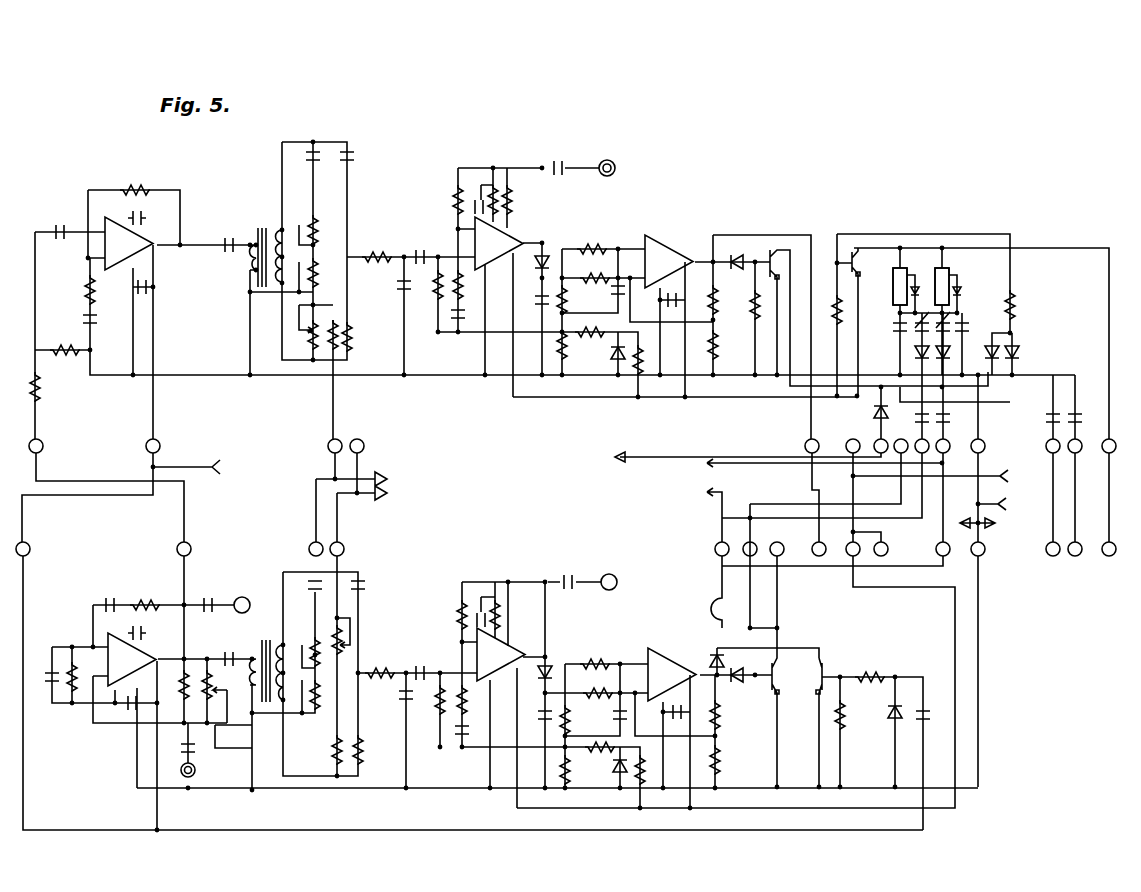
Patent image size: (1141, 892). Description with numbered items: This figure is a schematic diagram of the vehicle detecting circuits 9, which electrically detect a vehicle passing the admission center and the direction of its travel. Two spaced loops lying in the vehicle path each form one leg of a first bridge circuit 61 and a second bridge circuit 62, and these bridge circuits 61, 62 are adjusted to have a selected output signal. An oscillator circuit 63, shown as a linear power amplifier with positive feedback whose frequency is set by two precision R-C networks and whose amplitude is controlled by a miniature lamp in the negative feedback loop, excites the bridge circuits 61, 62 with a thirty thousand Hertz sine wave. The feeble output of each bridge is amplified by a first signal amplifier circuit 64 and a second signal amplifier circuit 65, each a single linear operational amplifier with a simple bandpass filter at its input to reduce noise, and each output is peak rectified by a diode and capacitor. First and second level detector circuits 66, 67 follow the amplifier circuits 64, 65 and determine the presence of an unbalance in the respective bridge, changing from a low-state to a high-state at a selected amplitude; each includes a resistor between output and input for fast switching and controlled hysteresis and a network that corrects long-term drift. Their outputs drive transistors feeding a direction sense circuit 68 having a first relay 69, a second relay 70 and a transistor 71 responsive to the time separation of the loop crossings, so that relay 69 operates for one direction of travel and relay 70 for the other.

The vehicle detecting circuits 9 is at (757, 171).
The first bridge circuit 61 is at (328, 141).
The second bridge circuit 62 is at (352, 572).
The oscillator circuit 63 is at (122, 269).
The first signal amplifier circuit 64 is at (514, 240).
The second signal amplifier circuit 65 is at (512, 650).
The first level detector circuit 66 is at (665, 244).
The second level detector circuit 67 is at (666, 662).
The direction sense circuit 68 is at (721, 498).
The first relay 69 is at (893, 304).
The second relay 70 is at (955, 276).
The transistor 71 is at (856, 252).